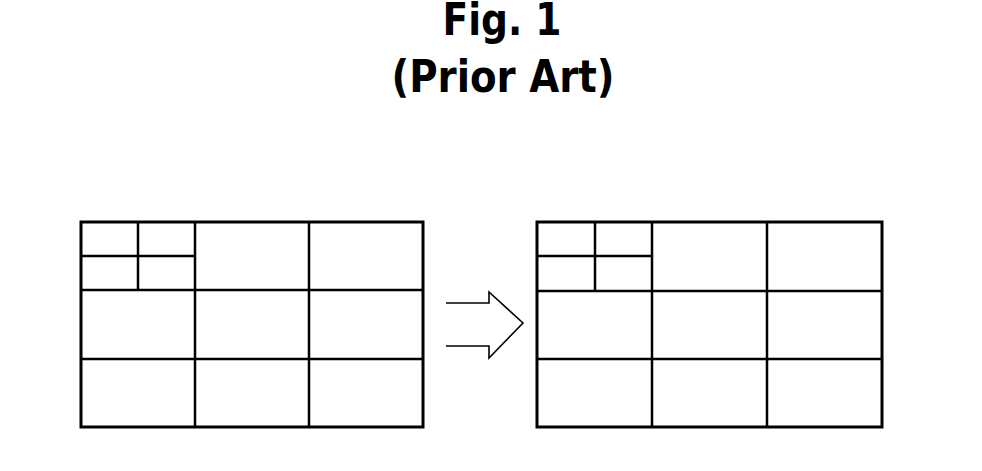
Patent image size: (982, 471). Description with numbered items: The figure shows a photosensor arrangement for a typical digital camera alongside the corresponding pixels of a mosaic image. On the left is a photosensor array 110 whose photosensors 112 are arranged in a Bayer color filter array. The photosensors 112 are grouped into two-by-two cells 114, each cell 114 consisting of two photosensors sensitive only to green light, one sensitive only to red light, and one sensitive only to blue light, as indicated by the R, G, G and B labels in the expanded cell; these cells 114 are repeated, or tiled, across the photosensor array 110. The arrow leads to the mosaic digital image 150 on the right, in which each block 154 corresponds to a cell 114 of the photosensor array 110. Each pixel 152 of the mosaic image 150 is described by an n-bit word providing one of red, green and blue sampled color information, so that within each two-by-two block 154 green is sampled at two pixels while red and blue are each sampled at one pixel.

The photosensor array 110 is at (357, 189).
The photosensors 112 is at (92, 233).
The cell 114 is at (97, 219).
The mosaic digital image 150 is at (752, 190).
The pixel 152 is at (594, 256).
The block 154 is at (551, 219).